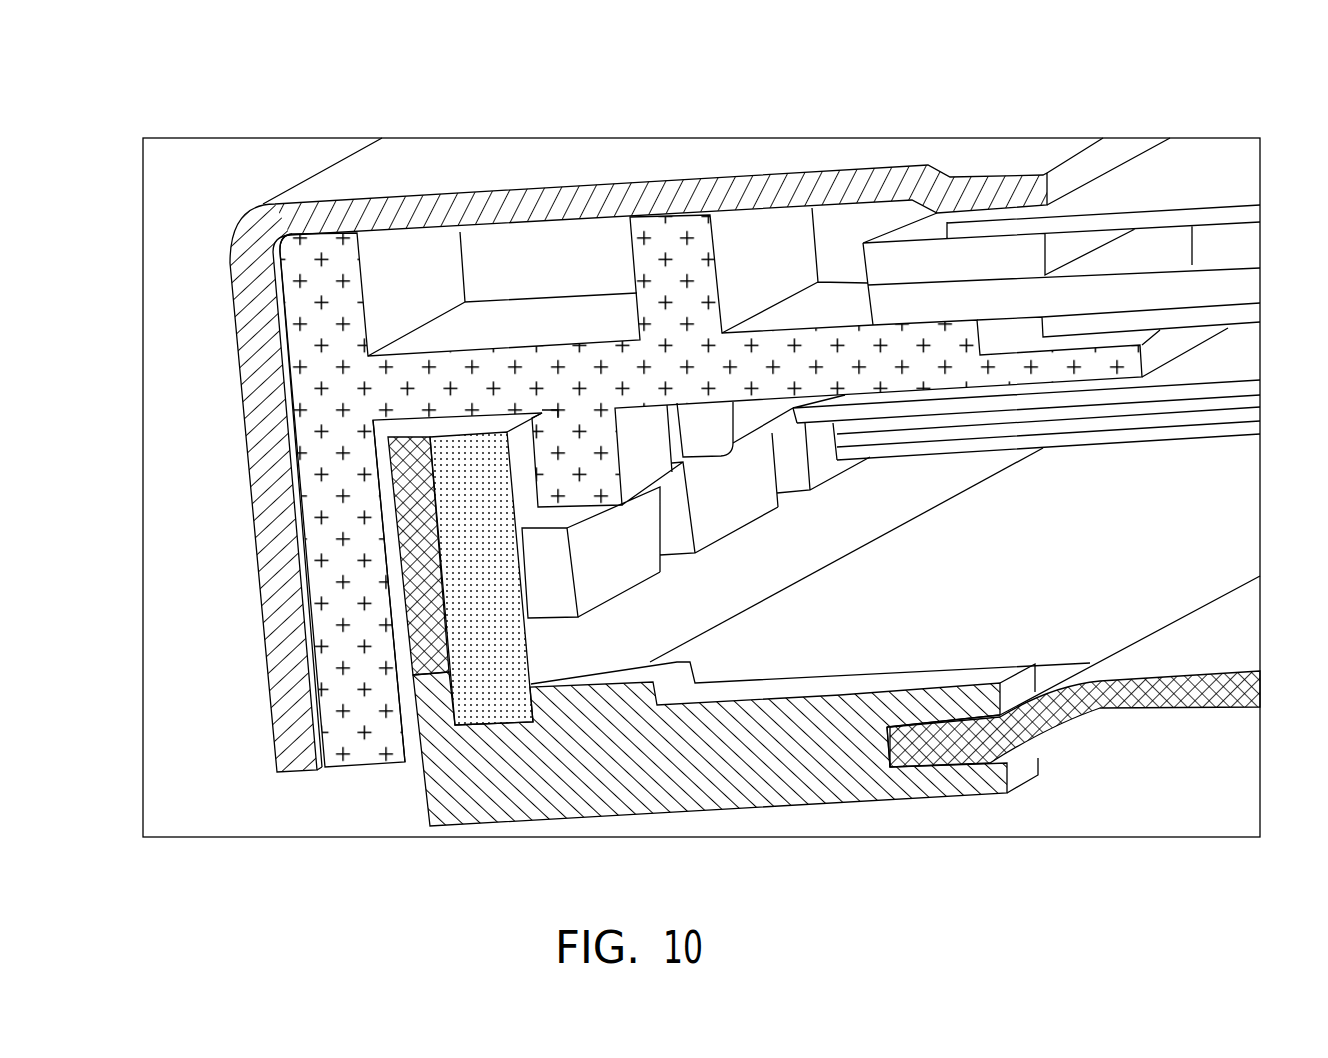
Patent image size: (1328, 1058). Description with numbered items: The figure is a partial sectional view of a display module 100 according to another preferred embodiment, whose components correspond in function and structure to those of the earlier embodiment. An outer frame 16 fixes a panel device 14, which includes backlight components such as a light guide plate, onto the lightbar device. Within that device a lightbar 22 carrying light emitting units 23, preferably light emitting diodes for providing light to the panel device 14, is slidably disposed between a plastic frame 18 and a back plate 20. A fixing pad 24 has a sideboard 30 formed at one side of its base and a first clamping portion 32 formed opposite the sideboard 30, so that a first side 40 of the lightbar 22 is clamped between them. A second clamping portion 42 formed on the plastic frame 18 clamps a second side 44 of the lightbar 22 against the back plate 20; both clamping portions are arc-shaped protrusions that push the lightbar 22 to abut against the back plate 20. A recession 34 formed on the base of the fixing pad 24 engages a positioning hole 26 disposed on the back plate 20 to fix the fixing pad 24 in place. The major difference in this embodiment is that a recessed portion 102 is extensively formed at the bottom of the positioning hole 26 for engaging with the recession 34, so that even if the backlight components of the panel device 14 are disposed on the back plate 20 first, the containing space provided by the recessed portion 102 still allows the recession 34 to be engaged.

The display module 100 is at (156, 106).
The panel device 14 is at (1217, 262).
The outer frame 16 is at (232, 264).
The plastic frame 18 is at (313, 355).
The back plate 20 is at (1227, 647).
The lightbar 22 is at (483, 666).
The light emitting unit 23 is at (557, 602).
The fixing pad 24 is at (800, 810).
The positioning hole 26 is at (1053, 670).
The sideboard 30 is at (437, 710).
The first clamping portion 32 is at (625, 672).
The recession 34 is at (883, 733).
The first side 40 is at (728, 588).
The second clamping portion 42 is at (550, 447).
The second side 44 is at (525, 458).
The recessed portion 102 is at (950, 746).